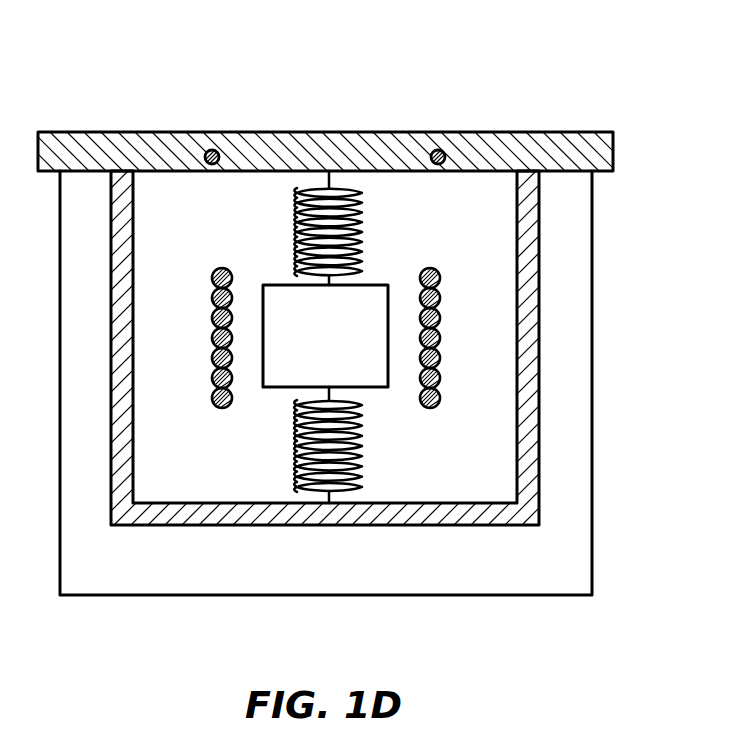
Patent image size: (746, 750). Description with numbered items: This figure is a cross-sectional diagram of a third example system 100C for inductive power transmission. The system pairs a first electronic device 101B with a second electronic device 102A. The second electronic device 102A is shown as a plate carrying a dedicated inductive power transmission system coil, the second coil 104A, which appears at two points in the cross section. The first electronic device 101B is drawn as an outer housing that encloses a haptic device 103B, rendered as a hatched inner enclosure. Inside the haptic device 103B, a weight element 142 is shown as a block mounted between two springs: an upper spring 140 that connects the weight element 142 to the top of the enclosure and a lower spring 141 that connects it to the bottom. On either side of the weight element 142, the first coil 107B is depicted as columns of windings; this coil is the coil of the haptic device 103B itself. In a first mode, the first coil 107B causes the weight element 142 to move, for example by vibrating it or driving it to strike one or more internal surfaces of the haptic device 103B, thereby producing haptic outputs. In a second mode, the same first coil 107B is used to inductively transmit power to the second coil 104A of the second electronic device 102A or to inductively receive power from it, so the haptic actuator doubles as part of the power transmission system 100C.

The third example system 100C is at (118, 60).
The second electronic device 102A is at (545, 132).
The second coil 104A is at (212, 150).
The first electronic device 101B is at (592, 303).
The haptic device 103B is at (538, 460).
The spring 140 is at (362, 213).
The spring 141 is at (362, 459).
The weight element 142 is at (365, 285).
The first coil 107B is at (212, 382).